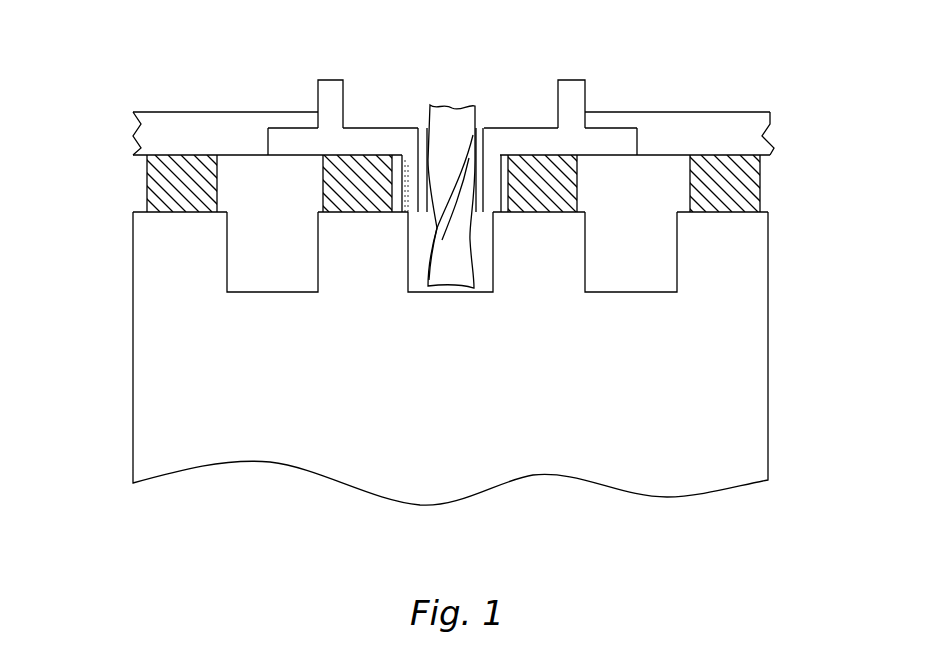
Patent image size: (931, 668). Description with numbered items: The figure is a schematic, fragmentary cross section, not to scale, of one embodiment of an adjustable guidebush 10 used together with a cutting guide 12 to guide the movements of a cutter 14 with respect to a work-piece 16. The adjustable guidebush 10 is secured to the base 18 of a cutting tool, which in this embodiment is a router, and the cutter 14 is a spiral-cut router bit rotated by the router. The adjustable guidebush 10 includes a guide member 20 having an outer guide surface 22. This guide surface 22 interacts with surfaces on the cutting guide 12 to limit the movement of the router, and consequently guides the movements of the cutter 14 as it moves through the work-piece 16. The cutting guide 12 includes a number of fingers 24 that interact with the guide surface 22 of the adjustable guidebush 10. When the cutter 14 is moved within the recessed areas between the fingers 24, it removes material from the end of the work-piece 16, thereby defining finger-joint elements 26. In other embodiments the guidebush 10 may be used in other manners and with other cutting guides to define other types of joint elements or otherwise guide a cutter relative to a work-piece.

The adjustable guidebush 10 is at (575, 79).
The cutting guide 12 is at (138, 185).
The cutter 14 is at (452, 103).
The work-piece 16 is at (747, 443).
The base 18 is at (713, 132).
The guide member 20 is at (487, 190).
The outer guide surface 22 is at (403, 156).
The fingers 24 is at (146, 176).
The finger-joint elements 26 is at (145, 256).